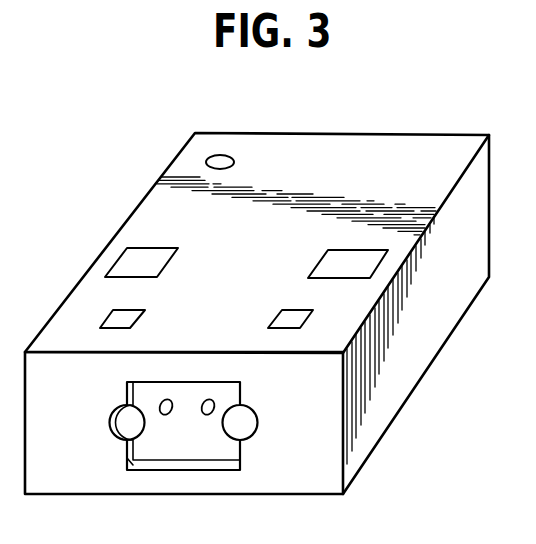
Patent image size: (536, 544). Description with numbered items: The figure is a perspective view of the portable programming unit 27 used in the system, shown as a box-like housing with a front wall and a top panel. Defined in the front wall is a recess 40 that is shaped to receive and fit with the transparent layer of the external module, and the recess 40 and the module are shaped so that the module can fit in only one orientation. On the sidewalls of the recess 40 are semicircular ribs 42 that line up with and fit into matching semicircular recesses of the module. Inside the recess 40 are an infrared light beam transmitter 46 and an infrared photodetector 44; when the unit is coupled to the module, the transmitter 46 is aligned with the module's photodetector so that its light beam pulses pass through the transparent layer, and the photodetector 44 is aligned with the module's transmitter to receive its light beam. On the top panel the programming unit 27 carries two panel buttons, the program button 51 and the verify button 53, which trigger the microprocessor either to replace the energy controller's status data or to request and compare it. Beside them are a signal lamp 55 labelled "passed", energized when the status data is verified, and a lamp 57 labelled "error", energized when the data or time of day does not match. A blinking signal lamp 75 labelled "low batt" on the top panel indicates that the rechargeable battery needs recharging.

The programming unit 27 is at (147, 191).
The blinking signal lamp 75 is at (227, 157).
The verify button 53 is at (160, 259).
The program button 51 is at (353, 258).
The signal lamp 55 is at (133, 317).
The lamp 57 is at (287, 318).
The recess 40 is at (152, 450).
The semicircular ribs 42 is at (127, 421).
The infrared light beam transmitter 46 is at (167, 398).
The infrared photodetector 44 is at (210, 399).